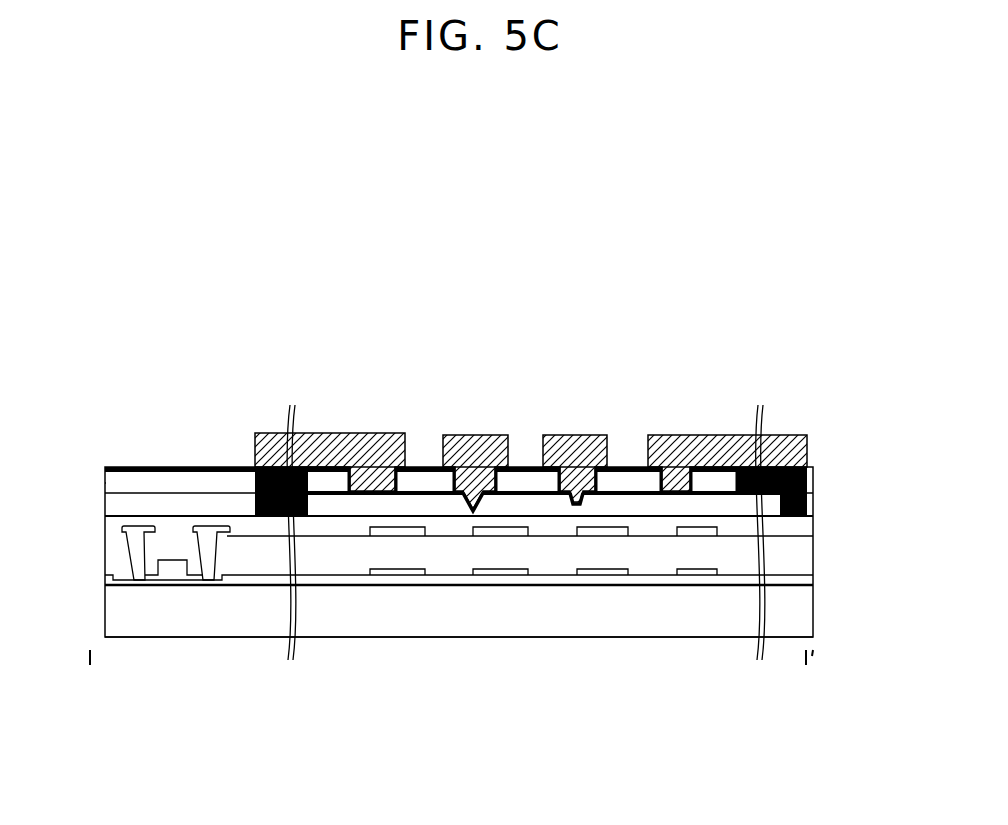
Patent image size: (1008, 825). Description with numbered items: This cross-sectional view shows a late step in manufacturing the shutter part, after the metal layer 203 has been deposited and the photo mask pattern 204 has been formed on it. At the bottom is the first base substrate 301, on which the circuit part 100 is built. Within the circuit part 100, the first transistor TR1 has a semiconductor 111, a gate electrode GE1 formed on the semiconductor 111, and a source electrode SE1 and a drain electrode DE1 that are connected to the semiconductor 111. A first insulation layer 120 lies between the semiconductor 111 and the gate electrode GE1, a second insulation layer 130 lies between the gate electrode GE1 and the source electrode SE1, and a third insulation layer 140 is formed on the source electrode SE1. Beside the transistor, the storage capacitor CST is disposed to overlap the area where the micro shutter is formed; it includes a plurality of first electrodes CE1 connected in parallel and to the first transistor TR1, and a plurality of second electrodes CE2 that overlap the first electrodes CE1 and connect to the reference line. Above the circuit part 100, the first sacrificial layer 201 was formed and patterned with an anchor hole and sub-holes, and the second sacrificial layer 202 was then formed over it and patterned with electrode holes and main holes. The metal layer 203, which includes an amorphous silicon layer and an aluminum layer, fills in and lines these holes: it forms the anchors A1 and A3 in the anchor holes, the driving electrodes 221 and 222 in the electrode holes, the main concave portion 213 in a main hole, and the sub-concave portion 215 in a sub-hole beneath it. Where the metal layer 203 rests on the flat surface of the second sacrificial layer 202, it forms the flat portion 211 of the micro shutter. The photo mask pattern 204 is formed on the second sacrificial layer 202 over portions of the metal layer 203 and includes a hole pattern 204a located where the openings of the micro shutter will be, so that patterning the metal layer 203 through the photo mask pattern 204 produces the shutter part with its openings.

The circuit part 100 is at (828, 520).
The semiconductor 111 is at (105, 603).
The first insulation layer 120 is at (105, 573).
The second insulation layer 130 is at (105, 547).
The third insulation layer 140 is at (105, 525).
The first sacrificial layer 201 is at (105, 503).
The second sacrificial layer 202 is at (105, 482).
The metal layer 203 is at (105, 467).
The photo mask pattern 204 is at (266, 434).
The hole pattern 204a is at (428, 440).
The flat portion 211 is at (333, 468).
The main concave portion 213 is at (577, 504).
The sub-concave portion 215 is at (471, 509).
The driving electrode 221 is at (746, 468).
The driving electrode 222 is at (313, 435).
The first base substrate 301 is at (802, 613).
The anchor A1 is at (807, 487).
The anchor A3 is at (250, 482).
The first transistor TR1 is at (170, 634).
The drain electrode DE1 is at (123, 581).
The gate electrode GE1 is at (172, 576).
The source electrode SE1 is at (207, 581).
The storage capacitor CST is at (521, 634).
The first electrode CE1 is at (398, 572).
The second electrode CE2 is at (373, 530).